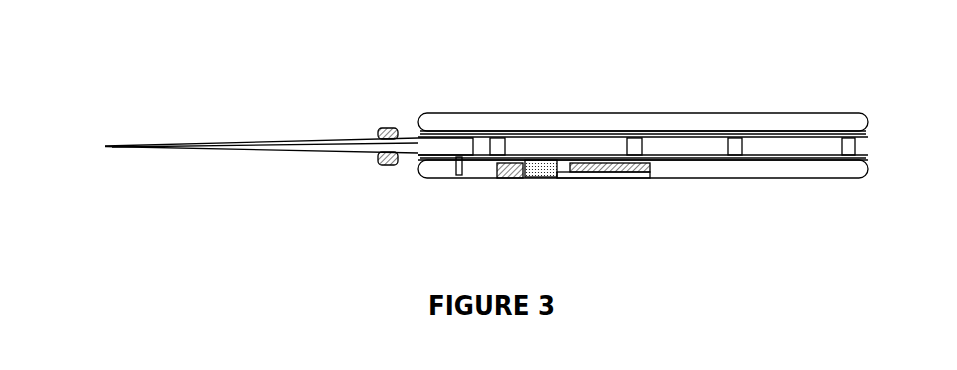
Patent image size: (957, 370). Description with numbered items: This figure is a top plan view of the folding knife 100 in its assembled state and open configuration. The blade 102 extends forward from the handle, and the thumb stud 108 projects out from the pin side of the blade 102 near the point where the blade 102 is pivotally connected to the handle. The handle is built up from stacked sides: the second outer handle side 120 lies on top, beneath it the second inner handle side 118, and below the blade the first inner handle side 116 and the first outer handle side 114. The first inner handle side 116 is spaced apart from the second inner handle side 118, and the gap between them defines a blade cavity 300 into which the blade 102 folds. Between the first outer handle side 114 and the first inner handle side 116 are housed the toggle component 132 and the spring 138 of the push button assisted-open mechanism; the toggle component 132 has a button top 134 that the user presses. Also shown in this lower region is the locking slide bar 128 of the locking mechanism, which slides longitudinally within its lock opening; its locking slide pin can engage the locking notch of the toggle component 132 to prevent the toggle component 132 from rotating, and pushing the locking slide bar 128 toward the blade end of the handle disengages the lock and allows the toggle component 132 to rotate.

The folding knife 100 is at (170, 70).
The blade 102 is at (216, 148).
The thumb stud 108 is at (380, 127).
The first outer handle side 114 is at (822, 170).
The first inner handle side 116 is at (870, 157).
The second inner handle side 118 is at (870, 133).
The second outer handle side 120 is at (820, 121).
The locking slide bar 128 is at (520, 180).
The toggle component 132 is at (568, 178).
The button top 134 is at (540, 178).
The spring 138 is at (608, 172).
The blade cavity 300 is at (577, 145).